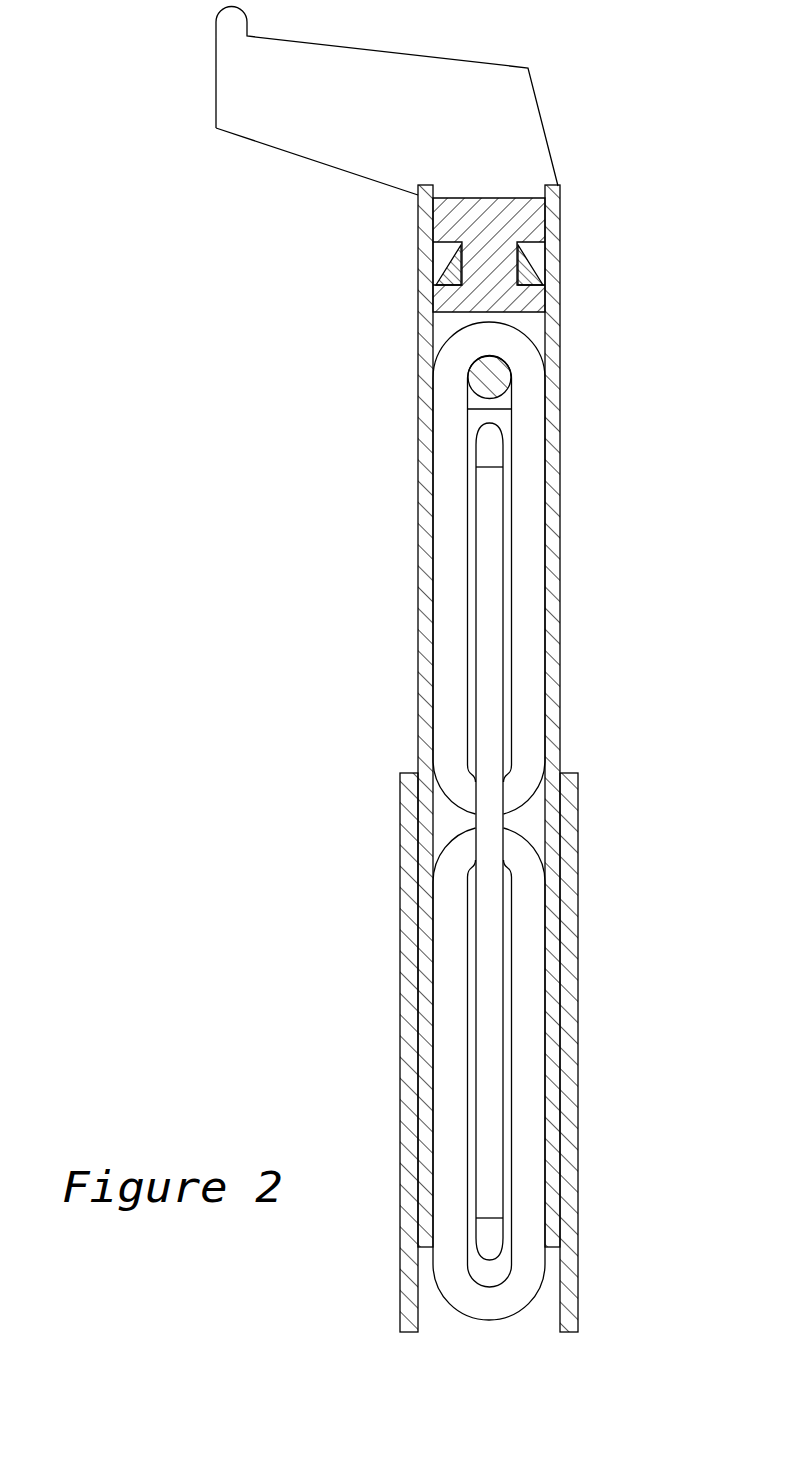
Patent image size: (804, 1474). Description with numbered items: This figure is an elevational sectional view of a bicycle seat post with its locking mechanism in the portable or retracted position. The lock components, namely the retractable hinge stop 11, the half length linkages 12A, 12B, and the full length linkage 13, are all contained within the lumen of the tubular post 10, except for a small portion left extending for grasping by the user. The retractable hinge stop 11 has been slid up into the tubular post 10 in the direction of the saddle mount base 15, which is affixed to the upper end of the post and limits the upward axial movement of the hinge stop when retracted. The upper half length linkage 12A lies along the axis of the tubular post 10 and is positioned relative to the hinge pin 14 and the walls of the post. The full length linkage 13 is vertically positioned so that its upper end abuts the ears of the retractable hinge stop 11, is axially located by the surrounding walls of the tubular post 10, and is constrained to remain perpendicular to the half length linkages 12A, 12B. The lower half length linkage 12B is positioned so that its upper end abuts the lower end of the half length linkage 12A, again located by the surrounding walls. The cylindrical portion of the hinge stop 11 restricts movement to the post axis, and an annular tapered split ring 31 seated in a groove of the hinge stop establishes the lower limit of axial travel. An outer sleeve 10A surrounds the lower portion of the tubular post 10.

The tubular post 10 is at (553, 458).
The outer sleeve 10A is at (575, 852).
The retractable hinge stop 11 is at (533, 225).
The half length linkage 12A is at (447, 543).
The half length linkage 12B is at (450, 1020).
The full length linkage 13 is at (488, 800).
The hinge pin 14 is at (483, 377).
The saddle mount base 15 is at (497, 99).
The annular tapered split ring 31 is at (448, 279).